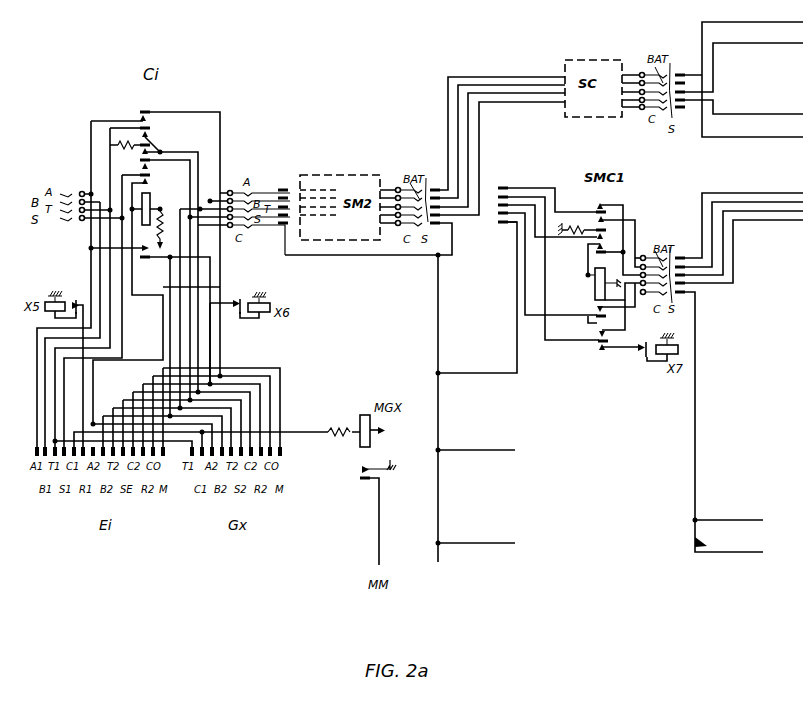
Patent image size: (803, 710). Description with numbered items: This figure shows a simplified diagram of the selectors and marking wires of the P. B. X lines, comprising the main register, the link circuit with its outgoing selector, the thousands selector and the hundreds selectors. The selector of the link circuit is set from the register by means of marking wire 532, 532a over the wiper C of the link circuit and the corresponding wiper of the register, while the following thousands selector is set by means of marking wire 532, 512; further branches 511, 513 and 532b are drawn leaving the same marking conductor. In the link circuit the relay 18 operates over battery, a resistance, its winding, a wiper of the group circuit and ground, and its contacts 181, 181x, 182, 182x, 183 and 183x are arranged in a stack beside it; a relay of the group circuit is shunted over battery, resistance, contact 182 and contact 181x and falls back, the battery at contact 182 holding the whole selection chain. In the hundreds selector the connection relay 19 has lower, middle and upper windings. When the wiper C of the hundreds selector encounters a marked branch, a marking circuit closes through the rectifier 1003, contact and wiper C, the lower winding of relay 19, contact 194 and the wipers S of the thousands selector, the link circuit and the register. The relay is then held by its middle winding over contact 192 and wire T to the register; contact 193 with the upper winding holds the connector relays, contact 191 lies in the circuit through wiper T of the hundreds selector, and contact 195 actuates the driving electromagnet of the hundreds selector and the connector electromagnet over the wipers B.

The contact 181 is at (155, 240).
The contact 181x is at (143, 137).
The contact 182 is at (154, 270).
The contact 182x is at (140, 163).
The contact 183 is at (163, 168).
The contact 183x is at (150, 330).
The relay 18 is at (150, 197).
The contact 191 is at (606, 235).
The contact 192 is at (610, 237).
The contact 193 is at (596, 253).
The contact 194 is at (611, 305).
The contact 195 is at (606, 333).
The connection relay 19 is at (602, 284).
The conductor 511 is at (476, 444).
The marking wire 512 is at (459, 239).
The conductor 513 is at (477, 299).
The marking wire 532 is at (441, 422).
The marking wire 532a is at (363, 265).
The conductor 532b is at (476, 537).
The rectifier 1003 is at (710, 422).